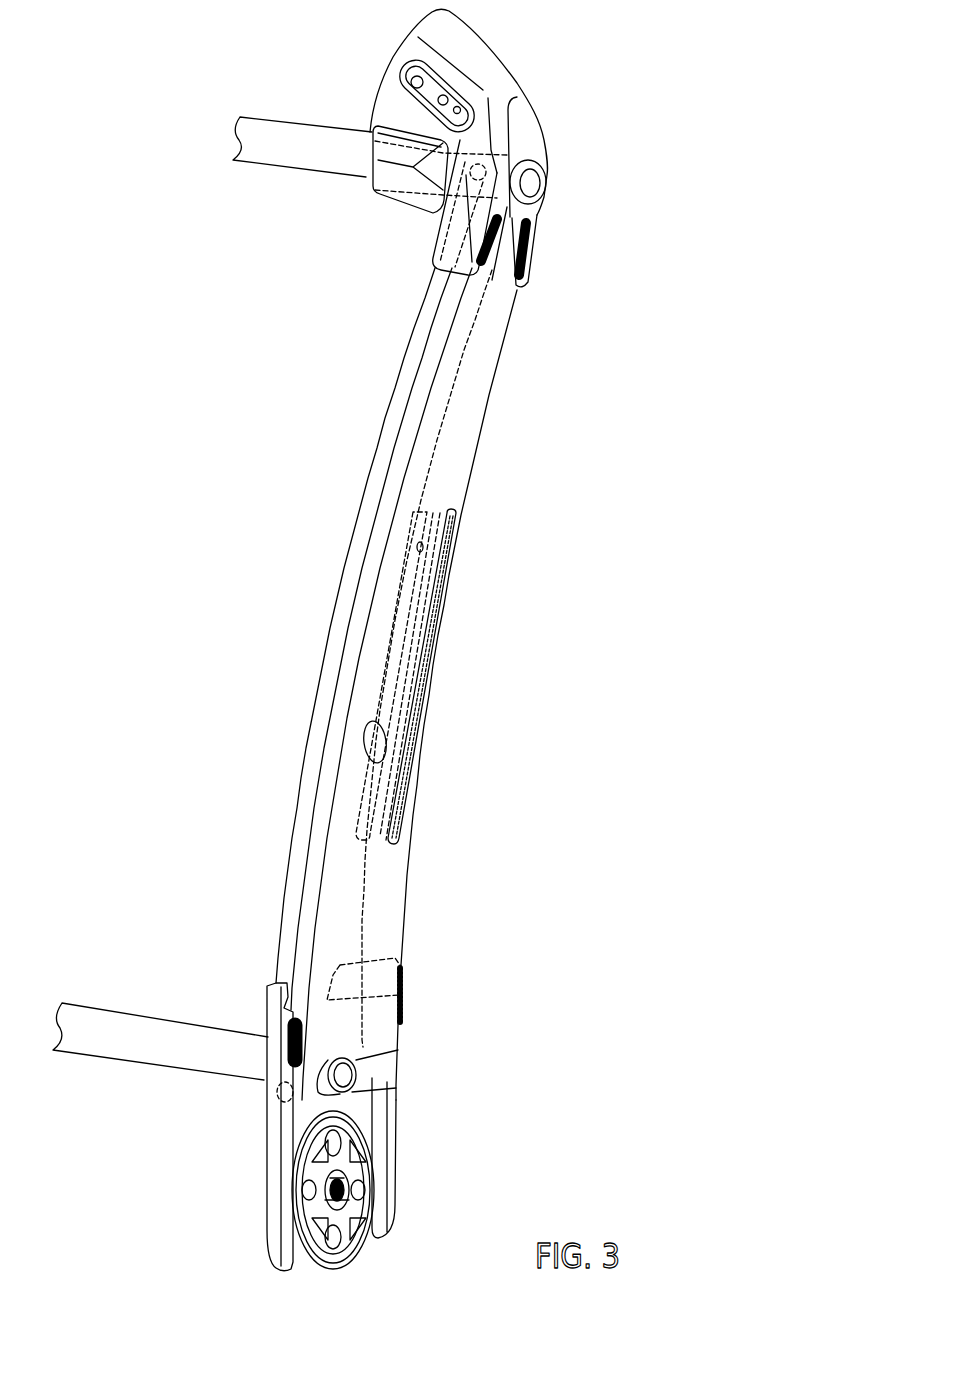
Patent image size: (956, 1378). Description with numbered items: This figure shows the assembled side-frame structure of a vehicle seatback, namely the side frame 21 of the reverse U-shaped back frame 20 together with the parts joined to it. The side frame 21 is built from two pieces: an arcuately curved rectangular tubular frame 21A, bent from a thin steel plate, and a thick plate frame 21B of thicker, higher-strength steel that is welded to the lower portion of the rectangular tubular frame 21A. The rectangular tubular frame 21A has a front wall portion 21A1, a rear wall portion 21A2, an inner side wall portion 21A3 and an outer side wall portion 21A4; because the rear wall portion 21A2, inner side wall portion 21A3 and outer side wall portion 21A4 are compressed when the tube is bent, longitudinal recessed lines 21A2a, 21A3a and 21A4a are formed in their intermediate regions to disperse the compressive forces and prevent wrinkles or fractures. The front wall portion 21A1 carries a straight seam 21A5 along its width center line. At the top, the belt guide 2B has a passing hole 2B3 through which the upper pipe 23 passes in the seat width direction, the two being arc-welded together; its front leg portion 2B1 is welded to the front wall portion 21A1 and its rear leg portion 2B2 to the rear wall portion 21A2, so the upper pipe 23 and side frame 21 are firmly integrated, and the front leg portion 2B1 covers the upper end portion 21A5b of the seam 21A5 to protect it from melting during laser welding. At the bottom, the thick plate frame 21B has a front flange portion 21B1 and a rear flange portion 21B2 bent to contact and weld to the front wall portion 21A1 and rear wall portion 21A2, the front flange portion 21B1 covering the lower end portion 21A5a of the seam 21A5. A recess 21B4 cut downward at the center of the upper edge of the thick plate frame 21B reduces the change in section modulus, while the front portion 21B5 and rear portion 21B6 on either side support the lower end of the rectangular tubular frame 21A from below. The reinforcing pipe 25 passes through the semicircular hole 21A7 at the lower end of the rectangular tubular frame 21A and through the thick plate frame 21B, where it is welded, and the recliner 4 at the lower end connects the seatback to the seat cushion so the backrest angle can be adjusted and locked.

The back frame 20 is at (117, 151).
The upper pipe 23 is at (280, 156).
The reinforcing pipe 25 is at (106, 1046).
The belt guide 2B is at (484, 148).
The front leg portion 2B1 is at (452, 233).
The rear leg portion 2B2 is at (538, 216).
The passing hole 2B3 is at (544, 165).
The side frame 21 is at (380, 769).
The rectangular tubular frame 21A is at (405, 684).
The front wall portion 21A1 is at (350, 568).
The rear wall portion 21A2 is at (480, 368).
The recessed line 21A2a is at (453, 568).
The inner side wall portion 21A3 is at (375, 487).
The recessed line 21A3a is at (382, 687).
The outer side wall portion 21A4 is at (482, 338).
The recessed line 21A4a is at (437, 630).
The seam 21A5 is at (343, 634).
The lower end portion of the seam 21A5a is at (280, 1097).
The upper end portion of the seam 21A5b is at (482, 166).
The semicircular hole 21A7 is at (346, 1077).
The thick plate frame 21B is at (358, 1082).
The front flange portion 21B1 is at (265, 1168).
The rear flange portion 21B2 is at (382, 1153).
The recess (cutout portion) 21B4 is at (404, 990).
The front portion 21B5 is at (280, 982).
The rear portion 21B6 is at (357, 977).
The recliner 4 is at (366, 1128).